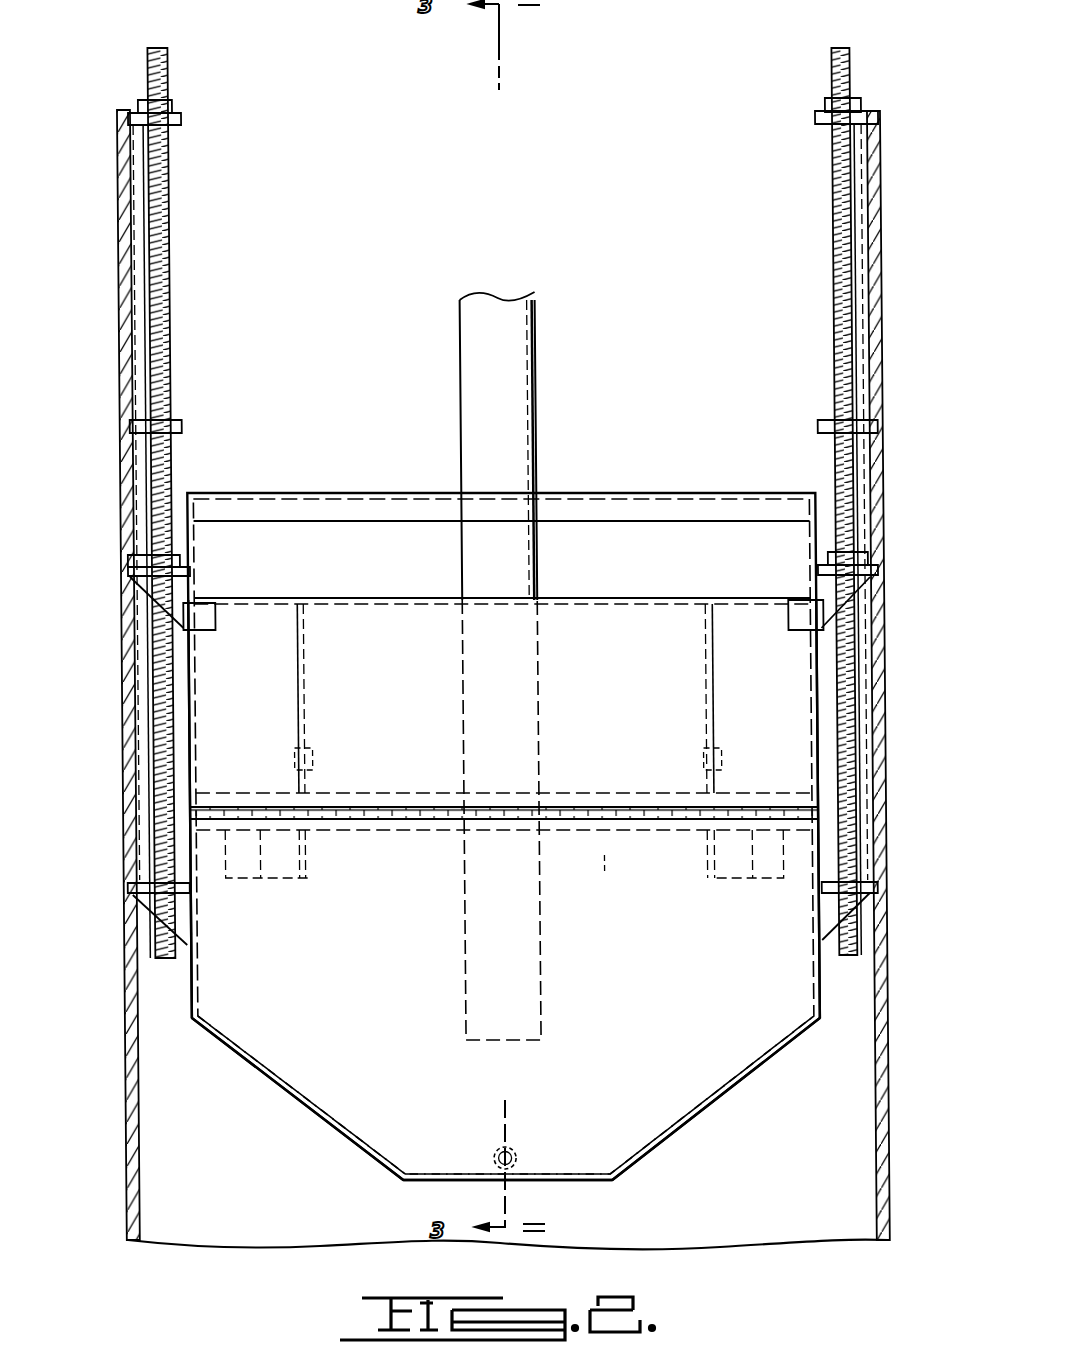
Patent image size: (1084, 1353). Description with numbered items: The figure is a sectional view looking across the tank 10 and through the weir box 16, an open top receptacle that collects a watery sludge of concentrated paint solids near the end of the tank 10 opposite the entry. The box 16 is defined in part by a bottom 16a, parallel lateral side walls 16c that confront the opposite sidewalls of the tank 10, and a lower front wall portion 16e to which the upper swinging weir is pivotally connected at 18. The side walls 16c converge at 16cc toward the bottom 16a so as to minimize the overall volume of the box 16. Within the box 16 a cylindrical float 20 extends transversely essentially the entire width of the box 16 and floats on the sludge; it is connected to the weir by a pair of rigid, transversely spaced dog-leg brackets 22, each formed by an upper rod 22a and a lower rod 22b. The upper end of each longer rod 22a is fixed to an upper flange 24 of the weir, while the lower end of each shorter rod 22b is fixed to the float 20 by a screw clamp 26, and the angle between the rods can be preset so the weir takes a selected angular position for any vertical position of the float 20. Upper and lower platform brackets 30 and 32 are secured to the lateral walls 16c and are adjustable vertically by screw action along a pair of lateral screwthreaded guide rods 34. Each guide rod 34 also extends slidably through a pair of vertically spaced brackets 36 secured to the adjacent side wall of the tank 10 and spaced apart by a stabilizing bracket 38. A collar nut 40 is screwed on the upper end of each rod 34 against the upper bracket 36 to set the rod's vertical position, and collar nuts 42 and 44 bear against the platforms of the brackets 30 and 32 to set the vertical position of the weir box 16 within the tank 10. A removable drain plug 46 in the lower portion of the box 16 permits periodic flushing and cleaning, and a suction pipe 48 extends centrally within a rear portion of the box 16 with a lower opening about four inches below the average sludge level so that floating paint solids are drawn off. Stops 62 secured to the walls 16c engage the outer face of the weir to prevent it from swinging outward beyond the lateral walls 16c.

The tank 10 is at (120, 332).
The weir box 16 is at (350, 478).
The bottom 16a is at (575, 1182).
The lateral side walls 16c is at (182, 678).
The converging portions of side walls 16cc is at (282, 1092).
The lower front wall portion 16e is at (388, 1010).
The pivotal connection 18 is at (396, 808).
The cylindrical float 20 is at (597, 878).
The dog-leg brackets 22 is at (690, 675).
The upper rod 22a is at (290, 702).
The lower rod 22b is at (310, 774).
The upper flange 24 is at (366, 598).
The screw clamp 26 is at (312, 880).
The upper platform bracket 30 is at (125, 578).
The lower platform bracket 32 is at (183, 915).
The screwthreaded guide rod 34 is at (168, 468).
The brackets 36 is at (180, 122).
The stabilizing bracket 38 is at (133, 262).
The collar nut 40 is at (171, 104).
The collar nut 42 is at (126, 560).
The collar nut 44 is at (128, 908).
The removable drain plug 46 is at (508, 1150).
The suction pipe 48 is at (460, 315).
The stops 62 is at (205, 613).